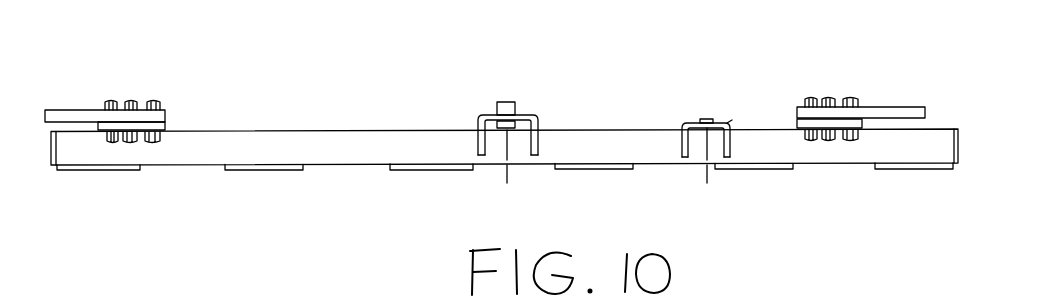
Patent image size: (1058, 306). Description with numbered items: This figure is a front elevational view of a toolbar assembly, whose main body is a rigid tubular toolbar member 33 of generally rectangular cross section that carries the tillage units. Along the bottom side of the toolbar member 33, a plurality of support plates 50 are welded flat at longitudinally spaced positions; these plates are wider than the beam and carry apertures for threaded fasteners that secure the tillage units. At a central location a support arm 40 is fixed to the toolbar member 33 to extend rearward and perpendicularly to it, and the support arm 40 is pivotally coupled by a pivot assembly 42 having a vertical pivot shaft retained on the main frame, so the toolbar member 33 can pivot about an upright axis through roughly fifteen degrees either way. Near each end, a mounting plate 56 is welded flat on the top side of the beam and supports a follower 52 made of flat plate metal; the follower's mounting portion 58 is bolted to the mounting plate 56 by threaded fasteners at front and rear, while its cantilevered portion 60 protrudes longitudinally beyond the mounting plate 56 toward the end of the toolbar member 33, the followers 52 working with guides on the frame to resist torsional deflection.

The toolbar member 33 is at (332, 150).
The support plates 50 is at (258, 168).
The cantilevered portion 60 is at (70, 115).
The mounting plate 56 is at (167, 125).
The followers 52 is at (145, 76).
The mounting portion 58 is at (147, 108).
The support arm 40 is at (535, 117).
The pivot assembly 42 is at (503, 107).